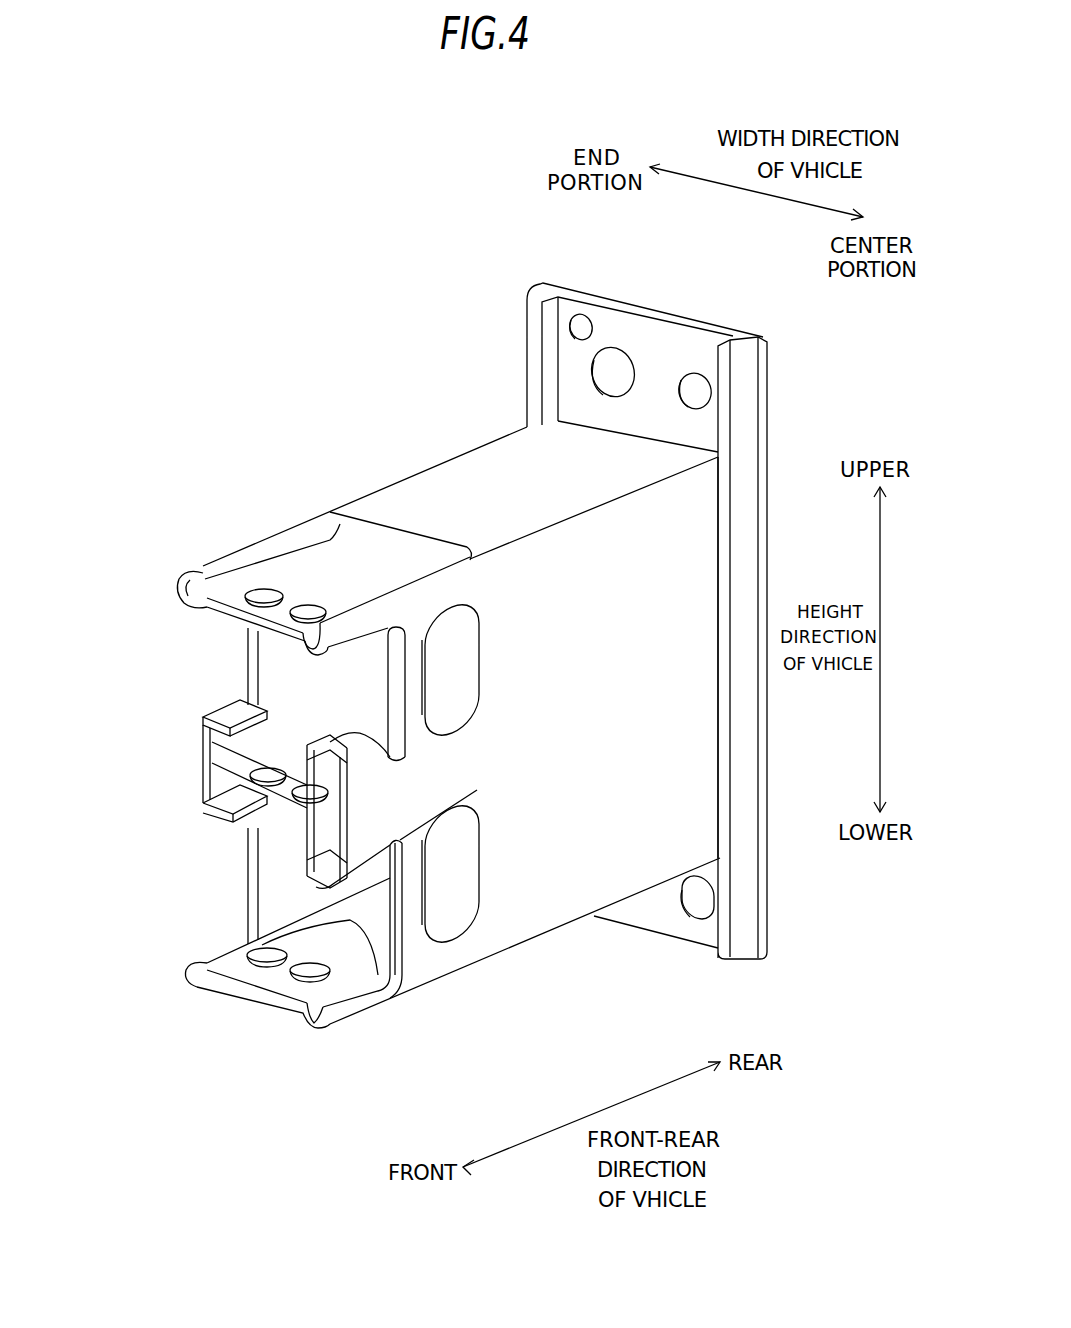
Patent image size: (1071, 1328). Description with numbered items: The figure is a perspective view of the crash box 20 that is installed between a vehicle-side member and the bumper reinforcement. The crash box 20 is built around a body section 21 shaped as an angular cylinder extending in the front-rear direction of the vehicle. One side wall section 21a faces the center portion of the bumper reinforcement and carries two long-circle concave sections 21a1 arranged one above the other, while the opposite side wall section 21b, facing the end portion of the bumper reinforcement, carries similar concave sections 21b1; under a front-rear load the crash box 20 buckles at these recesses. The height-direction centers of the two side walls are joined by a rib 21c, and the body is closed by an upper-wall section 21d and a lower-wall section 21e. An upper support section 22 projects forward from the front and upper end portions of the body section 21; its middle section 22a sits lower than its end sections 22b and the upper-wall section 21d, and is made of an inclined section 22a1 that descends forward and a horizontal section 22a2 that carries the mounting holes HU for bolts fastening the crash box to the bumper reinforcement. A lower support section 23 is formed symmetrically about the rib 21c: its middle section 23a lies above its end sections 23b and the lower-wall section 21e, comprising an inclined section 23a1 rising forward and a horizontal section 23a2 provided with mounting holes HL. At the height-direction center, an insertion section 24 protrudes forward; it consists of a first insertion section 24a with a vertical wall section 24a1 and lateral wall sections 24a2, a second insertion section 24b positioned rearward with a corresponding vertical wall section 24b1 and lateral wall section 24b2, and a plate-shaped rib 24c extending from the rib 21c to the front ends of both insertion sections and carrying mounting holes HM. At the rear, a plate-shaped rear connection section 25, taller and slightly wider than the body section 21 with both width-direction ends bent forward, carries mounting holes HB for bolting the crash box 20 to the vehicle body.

The crash box 20 is at (458, 316).
The body section 21 is at (515, 485).
The side wall section 21a is at (554, 903).
The concave section 21a1 is at (456, 661).
The side wall section 21b is at (283, 904).
The concave section 21b1 is at (272, 653).
The rib 21c is at (408, 645).
The upper-wall section 21d is at (447, 495).
The lower-wall section 21e is at (493, 932).
The upper support section 22 is at (220, 623).
The middle section 22a is at (325, 446).
The inclined section 22a1 is at (357, 543).
The horizontal section 22a2 is at (238, 600).
The end section 22b is at (190, 575).
The lower support section 23 is at (247, 985).
The middle section 23a is at (320, 1092).
The inclined section 23a1 is at (307, 1005).
The horizontal section 23a2 is at (262, 985).
The end section 23b is at (186, 972).
The insertion section 24 is at (328, 738).
The first insertion section 24a is at (542, 718).
The vertical wall section 24a1 is at (395, 775).
The lateral wall section 24a2 is at (410, 735).
The second insertion section 24b is at (90, 700).
The vertical wall section 24b1 is at (205, 750).
The lateral wall section 24b2 is at (200, 718).
The rib 24c is at (307, 830).
The rear connection section 25 is at (690, 316).
The mounting hole HB is at (586, 313).
The mounting hole HU is at (272, 586).
The mounting hole HM is at (282, 755).
The mounting hole HL is at (270, 945).